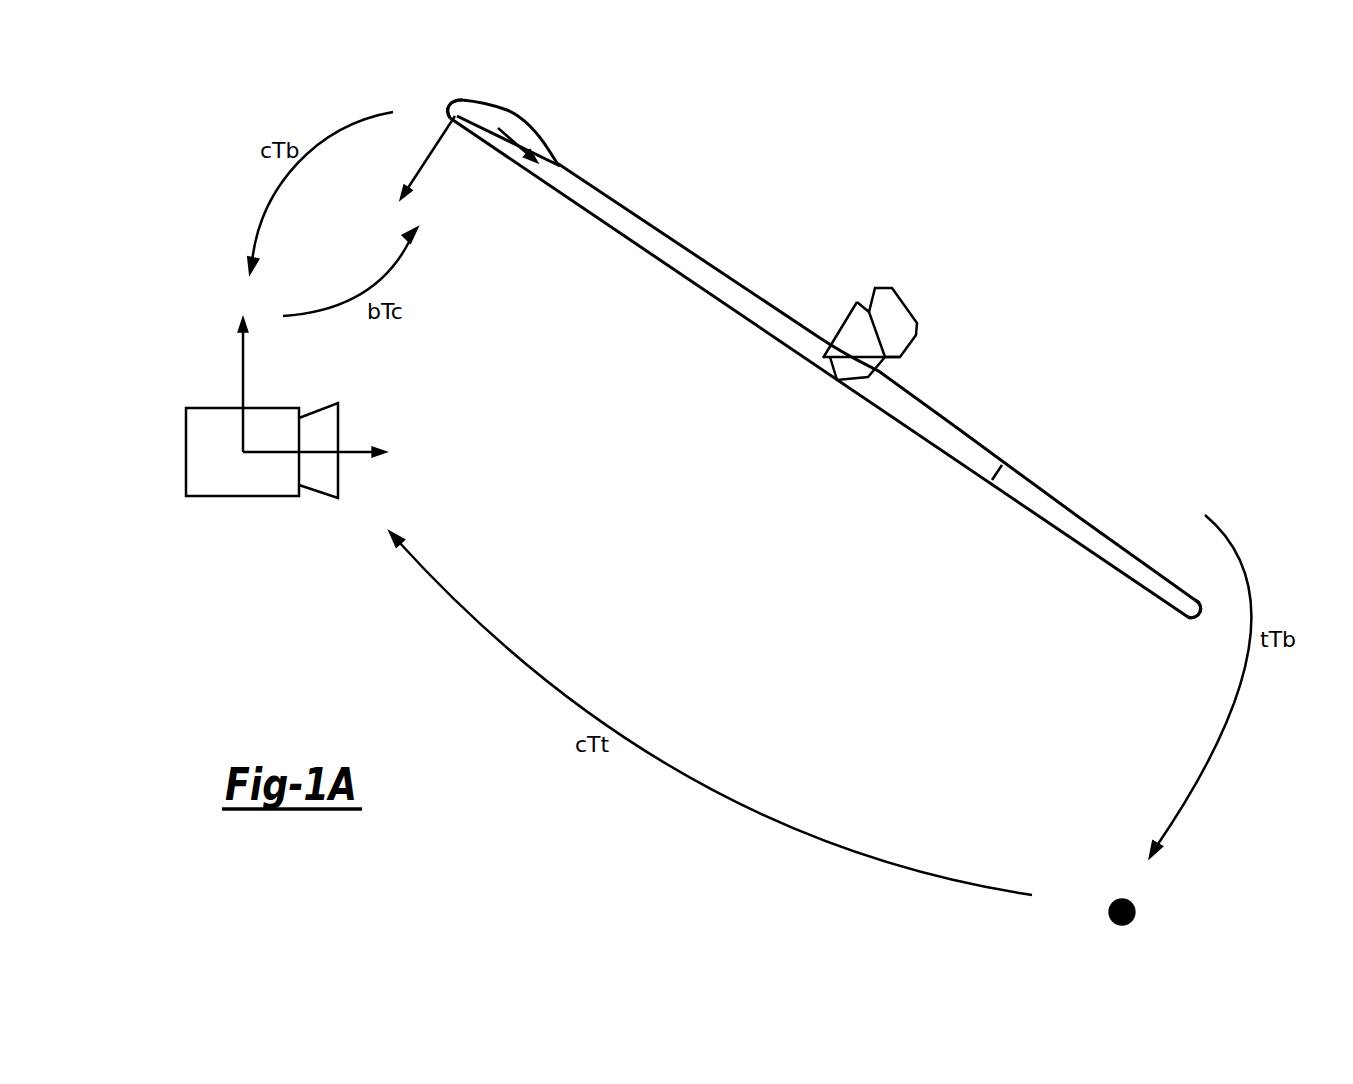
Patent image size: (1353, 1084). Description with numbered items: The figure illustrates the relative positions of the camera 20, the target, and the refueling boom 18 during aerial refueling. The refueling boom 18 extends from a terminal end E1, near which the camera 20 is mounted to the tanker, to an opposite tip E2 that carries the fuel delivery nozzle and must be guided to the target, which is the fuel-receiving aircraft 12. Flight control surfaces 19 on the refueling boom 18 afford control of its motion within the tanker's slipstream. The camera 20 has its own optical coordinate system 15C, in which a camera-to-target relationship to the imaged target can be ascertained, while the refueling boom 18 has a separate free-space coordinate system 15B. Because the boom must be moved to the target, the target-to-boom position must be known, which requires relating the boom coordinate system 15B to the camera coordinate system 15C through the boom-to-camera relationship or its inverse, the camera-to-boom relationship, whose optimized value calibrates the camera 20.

The fuel-receiving aircraft 12 is at (1135, 912).
The coordinate system of the refueling boom 15B is at (440, 163).
The coordinate system of the camera 15C is at (202, 347).
The refueling boom 18 is at (725, 362).
The flight control surfaces 19 is at (913, 288).
The camera 20 is at (186, 452).
The terminal end E1 is at (447, 90).
The tip E2 is at (1180, 625).